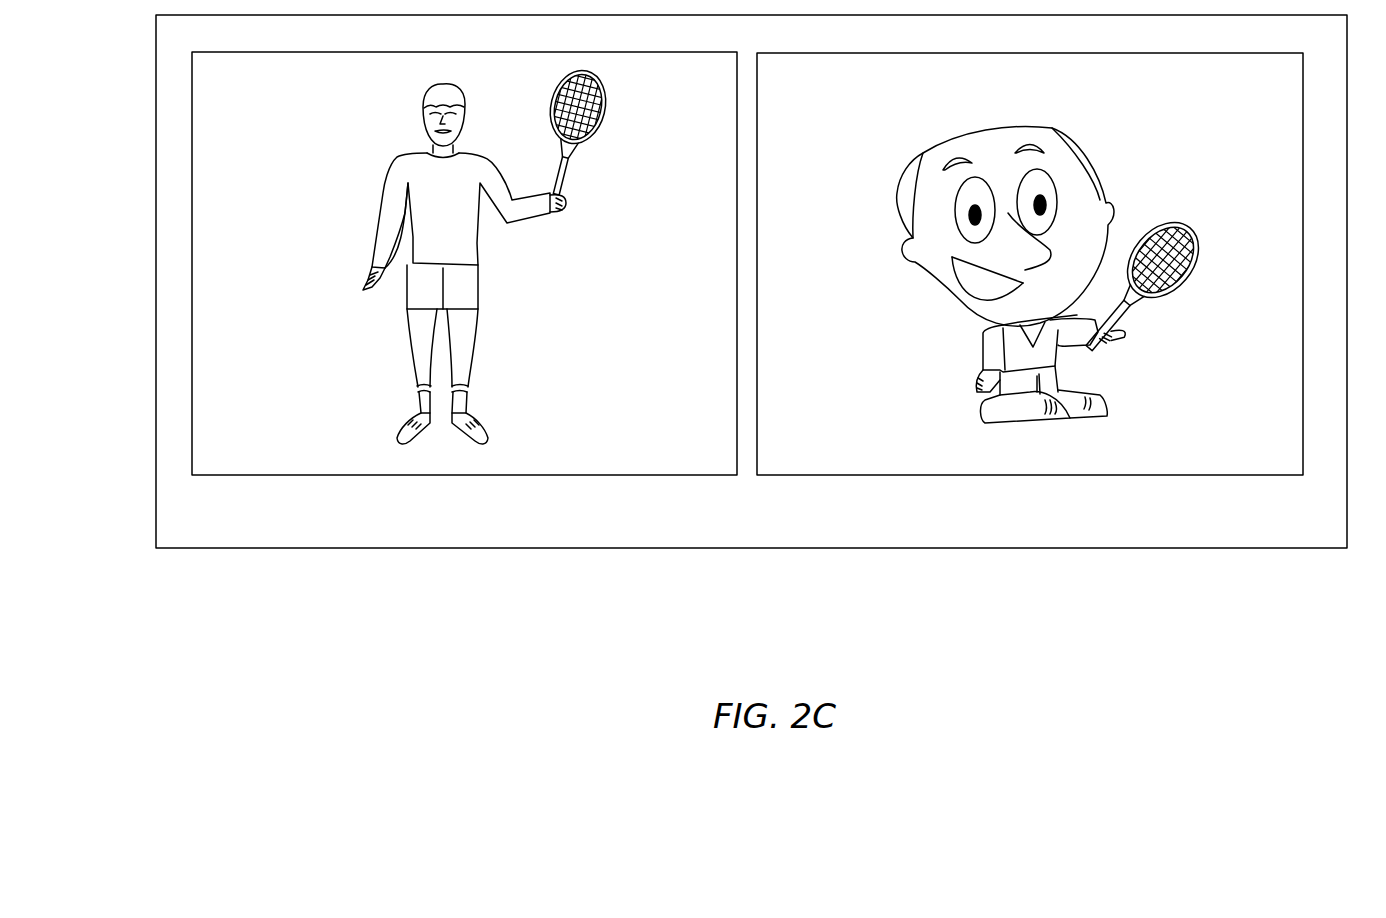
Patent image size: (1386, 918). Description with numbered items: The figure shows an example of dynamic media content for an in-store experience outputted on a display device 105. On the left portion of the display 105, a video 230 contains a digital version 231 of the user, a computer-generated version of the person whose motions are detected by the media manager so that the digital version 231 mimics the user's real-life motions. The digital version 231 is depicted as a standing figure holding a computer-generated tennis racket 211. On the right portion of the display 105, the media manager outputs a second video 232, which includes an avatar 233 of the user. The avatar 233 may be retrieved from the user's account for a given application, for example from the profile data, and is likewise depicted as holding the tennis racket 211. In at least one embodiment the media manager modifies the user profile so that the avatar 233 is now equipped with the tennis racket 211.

The display device 105 is at (770, 528).
The computer-generated tennis racket 211 is at (607, 115).
The video 230 is at (253, 401).
The digital version of the user 231 is at (427, 83).
The second video 232 is at (833, 401).
The avatar 233 is at (975, 125).